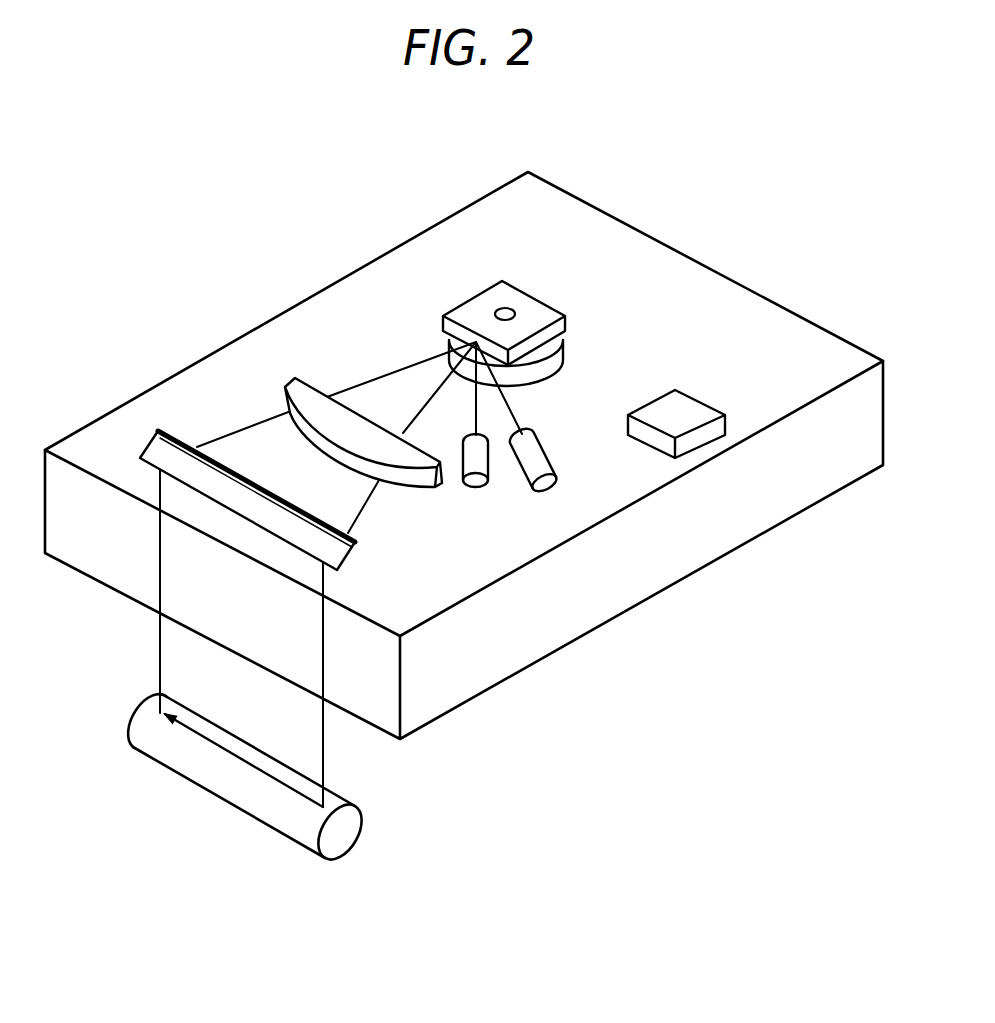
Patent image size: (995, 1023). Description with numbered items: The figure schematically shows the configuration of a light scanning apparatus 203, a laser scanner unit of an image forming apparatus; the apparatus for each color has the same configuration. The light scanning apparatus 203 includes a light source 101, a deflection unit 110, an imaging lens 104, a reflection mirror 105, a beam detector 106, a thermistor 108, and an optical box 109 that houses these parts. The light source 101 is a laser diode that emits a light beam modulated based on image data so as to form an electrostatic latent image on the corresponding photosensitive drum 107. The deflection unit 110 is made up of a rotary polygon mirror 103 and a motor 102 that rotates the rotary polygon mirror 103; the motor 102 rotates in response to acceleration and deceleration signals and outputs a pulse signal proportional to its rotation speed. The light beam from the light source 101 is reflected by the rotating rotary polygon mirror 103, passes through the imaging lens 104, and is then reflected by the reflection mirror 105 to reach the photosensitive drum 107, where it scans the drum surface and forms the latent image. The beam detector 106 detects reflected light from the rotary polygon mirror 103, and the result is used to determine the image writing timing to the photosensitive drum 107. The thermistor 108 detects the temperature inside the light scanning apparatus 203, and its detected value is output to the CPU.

The light source 101 is at (540, 436).
The motor 102 is at (563, 358).
The rotary polygon mirror 103 is at (528, 287).
The imaging lens 104 is at (424, 486).
The reflection mirror 105 is at (352, 555).
The beam detector 106 is at (477, 486).
The photosensitive drum 107 is at (340, 793).
The thermistor 108 is at (690, 395).
The optical box 109 is at (820, 323).
The deflection unit 110 is at (463, 287).
The light scanning apparatus 203 is at (673, 238).